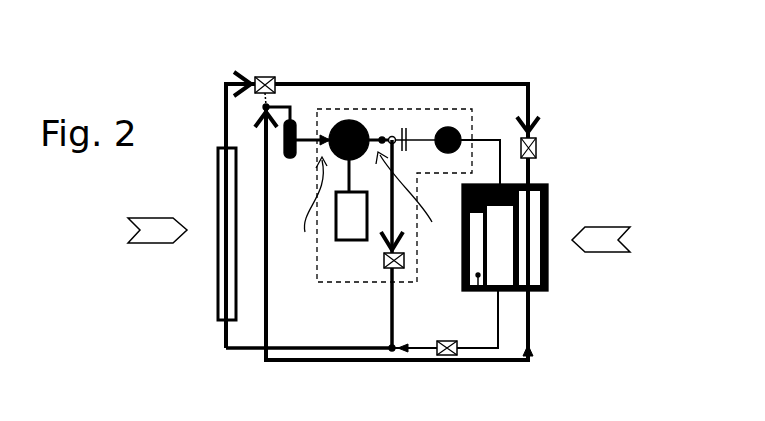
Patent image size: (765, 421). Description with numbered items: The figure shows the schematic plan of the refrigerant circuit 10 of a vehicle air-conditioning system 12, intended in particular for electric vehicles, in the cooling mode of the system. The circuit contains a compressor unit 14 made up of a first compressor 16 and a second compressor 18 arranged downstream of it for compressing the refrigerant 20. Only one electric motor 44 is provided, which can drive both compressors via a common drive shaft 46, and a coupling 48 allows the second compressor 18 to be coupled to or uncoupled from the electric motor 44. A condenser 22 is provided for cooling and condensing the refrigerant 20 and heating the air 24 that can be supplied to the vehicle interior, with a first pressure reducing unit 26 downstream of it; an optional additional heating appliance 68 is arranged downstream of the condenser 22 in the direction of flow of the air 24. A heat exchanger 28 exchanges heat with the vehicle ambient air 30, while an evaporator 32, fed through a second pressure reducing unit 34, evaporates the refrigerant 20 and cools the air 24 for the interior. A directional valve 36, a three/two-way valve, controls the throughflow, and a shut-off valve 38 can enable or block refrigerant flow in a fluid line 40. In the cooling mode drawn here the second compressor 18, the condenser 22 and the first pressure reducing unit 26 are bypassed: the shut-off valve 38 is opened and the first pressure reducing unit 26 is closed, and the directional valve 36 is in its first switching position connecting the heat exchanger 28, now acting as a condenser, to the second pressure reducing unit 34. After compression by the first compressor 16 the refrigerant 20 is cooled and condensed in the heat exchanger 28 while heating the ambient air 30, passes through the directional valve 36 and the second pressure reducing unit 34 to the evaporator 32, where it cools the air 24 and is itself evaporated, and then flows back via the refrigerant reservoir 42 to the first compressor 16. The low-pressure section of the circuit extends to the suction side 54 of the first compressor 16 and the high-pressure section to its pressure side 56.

The refrigerant circuit 10 is at (563, 75).
The vehicle air-conditioning system 12 is at (567, 70).
The compressor unit 14 is at (343, 283).
The first compressor 16 is at (345, 120).
The second compressor 18 is at (456, 130).
The refrigerant 20 is at (256, 146).
The condenser 22 is at (500, 265).
The air 24 is at (600, 230).
The first pressure reducing unit 26 is at (446, 357).
The heat exchanger 28 is at (218, 294).
The vehicle ambient air 30 is at (148, 216).
The evaporator 32 is at (540, 203).
The second pressure reducing unit 34 is at (538, 148).
The directional valve 36 is at (262, 76).
The shut-off valve 38 is at (406, 262).
The fluid line 40 is at (393, 302).
The refrigerant reservoir 42 is at (290, 162).
The electric motor 44 is at (350, 228).
The common drive shaft 46 is at (383, 136).
The coupling 48 is at (405, 128).
The suction side 54 is at (308, 207).
The pressure side 56 is at (416, 192).
The heating appliance 68 is at (480, 295).